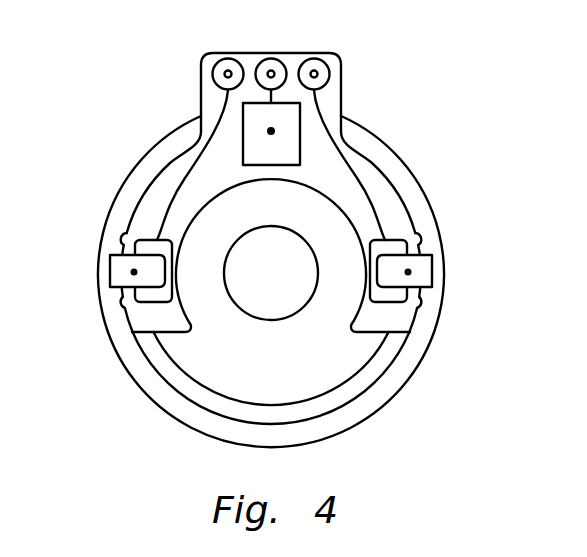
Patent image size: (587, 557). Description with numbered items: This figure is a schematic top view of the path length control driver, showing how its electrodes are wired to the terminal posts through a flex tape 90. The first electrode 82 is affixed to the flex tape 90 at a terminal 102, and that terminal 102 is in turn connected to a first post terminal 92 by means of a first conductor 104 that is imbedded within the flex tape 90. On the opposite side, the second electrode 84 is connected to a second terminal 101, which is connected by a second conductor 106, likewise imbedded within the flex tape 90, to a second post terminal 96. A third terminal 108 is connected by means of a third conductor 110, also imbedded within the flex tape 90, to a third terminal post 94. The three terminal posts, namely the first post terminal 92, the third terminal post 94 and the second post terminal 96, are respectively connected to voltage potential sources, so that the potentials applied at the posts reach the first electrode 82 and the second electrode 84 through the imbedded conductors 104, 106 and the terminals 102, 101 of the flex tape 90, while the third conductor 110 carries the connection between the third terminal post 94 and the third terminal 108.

The first electrode 82 is at (110, 283).
The second electrode 84 is at (432, 280).
The flex tape 90 is at (331, 108).
The first post terminal 92 is at (212, 74).
The third terminal post 94 is at (271, 58).
The second post terminal 96 is at (329, 70).
The second terminal 101 is at (421, 230).
The terminal 102 is at (126, 229).
The first conductor 104 is at (181, 188).
The second conductor 106 is at (371, 197).
The third terminal 108 is at (250, 103).
The third conductor 110 is at (281, 103).